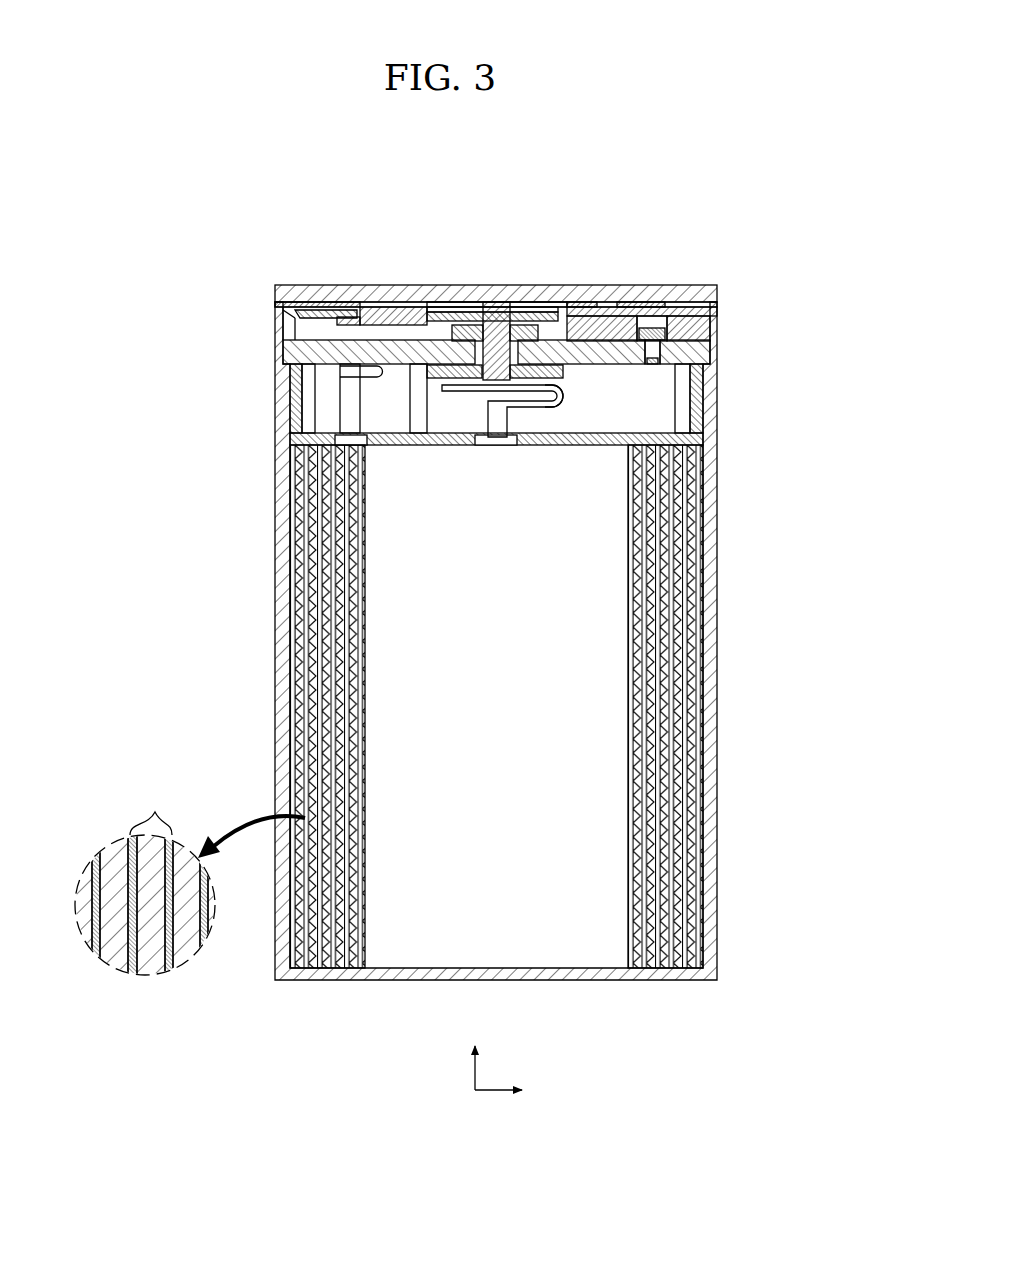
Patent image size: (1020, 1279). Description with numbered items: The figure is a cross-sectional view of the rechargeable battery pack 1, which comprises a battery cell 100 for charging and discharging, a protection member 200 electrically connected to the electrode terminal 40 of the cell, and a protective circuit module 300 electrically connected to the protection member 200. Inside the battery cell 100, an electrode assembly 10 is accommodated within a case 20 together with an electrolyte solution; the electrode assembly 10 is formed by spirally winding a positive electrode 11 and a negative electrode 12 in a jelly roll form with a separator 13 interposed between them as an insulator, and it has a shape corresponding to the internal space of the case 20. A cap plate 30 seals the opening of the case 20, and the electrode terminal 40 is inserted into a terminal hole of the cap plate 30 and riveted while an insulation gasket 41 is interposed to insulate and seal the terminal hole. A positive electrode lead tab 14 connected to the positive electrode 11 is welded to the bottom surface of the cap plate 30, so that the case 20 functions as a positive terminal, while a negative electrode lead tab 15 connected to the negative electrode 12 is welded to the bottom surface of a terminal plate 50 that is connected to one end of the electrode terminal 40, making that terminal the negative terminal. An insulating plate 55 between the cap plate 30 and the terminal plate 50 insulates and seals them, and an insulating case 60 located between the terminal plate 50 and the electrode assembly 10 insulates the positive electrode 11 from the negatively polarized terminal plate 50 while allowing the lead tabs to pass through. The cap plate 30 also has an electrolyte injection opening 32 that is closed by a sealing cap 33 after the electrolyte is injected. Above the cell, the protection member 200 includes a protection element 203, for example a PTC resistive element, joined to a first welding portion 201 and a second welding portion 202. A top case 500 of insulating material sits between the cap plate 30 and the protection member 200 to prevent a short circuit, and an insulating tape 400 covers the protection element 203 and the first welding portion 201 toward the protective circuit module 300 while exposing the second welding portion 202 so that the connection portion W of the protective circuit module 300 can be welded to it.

The rechargeable battery pack 1 is at (411, 177).
The electrode assembly 10 is at (302, 600).
The positive electrode 11 is at (152, 962).
The negative electrode 12 is at (188, 955).
The separator 13 is at (155, 812).
The positive electrode lead tab 14 is at (345, 406).
The negative electrode lead tab 15 is at (557, 403).
The case 20 is at (712, 791).
The cap plate 30 is at (290, 350).
The electrolyte injection opening 32 is at (665, 362).
The sealing cap 33 is at (649, 307).
The electrode terminal 40 is at (492, 301).
The insulation gasket 41 is at (456, 300).
The terminal plate 50 is at (510, 396).
The insulating plate 55 is at (430, 378).
The insulating case 60 is at (708, 440).
The battery cell 100 is at (728, 594).
The protection member 200 is at (273, 308).
The first welding portion 201 is at (536, 305).
The second welding portion 202 is at (594, 307).
The protection element 203 is at (386, 310).
The protective circuit module 300 is at (694, 297).
The insulating tape 400 is at (322, 300).
The top case 500 is at (712, 324).
The connection portion W is at (633, 304).